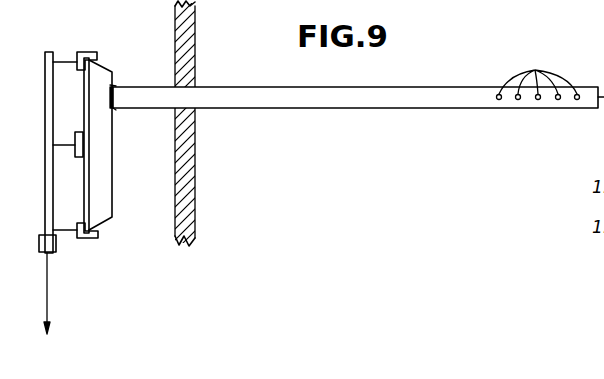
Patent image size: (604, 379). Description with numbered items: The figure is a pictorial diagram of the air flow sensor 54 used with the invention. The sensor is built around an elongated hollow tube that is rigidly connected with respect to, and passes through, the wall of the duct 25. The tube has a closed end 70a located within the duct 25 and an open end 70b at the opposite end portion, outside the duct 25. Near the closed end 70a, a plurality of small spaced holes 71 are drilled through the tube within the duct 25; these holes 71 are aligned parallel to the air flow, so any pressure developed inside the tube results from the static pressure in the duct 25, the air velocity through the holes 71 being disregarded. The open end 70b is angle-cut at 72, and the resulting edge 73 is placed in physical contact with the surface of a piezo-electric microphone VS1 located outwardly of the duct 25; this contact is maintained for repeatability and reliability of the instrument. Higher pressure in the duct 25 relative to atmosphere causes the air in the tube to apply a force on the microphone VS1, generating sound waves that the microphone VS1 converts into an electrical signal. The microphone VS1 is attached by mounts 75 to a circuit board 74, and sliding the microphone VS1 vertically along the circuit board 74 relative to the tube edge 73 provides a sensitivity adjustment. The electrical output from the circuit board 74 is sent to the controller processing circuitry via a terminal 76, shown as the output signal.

The duct 25 is at (195, 25).
The air flow sensor 54 is at (357, 163).
The closed end 70a is at (600, 105).
The open end 70b is at (115, 120).
The holes 71 is at (535, 70).
The angle cut 72 is at (116, 108).
The edge 73 is at (113, 83).
The circuit board 74 is at (45, 163).
The mounts 75 is at (83, 51).
The terminal 76 is at (39, 236).
The piezo-electric microphone VS1 is at (100, 64).